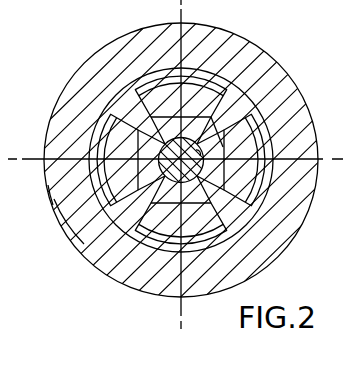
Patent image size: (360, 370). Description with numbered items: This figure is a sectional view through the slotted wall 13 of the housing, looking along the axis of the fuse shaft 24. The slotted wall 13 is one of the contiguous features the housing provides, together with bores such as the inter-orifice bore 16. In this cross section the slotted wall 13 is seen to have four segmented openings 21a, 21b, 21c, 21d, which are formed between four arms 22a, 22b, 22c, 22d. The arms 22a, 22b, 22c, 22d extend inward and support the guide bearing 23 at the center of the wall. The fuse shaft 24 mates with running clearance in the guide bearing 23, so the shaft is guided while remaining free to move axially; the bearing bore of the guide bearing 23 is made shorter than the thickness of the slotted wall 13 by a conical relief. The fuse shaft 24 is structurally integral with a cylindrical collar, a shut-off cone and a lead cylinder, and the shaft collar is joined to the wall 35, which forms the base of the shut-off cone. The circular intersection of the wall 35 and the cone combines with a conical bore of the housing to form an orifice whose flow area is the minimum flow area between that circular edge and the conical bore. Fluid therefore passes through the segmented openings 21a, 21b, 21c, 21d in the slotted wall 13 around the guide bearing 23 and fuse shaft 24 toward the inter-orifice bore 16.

The slotted wall 13 is at (278, 72).
The inter-orifice bore 16 is at (166, 178).
The segmented opening 21a is at (262, 136).
The segmented opening 21b is at (218, 234).
The segmented opening 21c is at (98, 132).
The segmented opening 21d is at (158, 82).
The arm 22a is at (250, 186).
The arm 22b is at (148, 206).
The arm 22c is at (117, 128).
The arm 22d is at (230, 98).
The guide bearing 23 is at (223, 147).
The fuse shaft 24 is at (84, 244).
The wall 35 is at (53, 205).